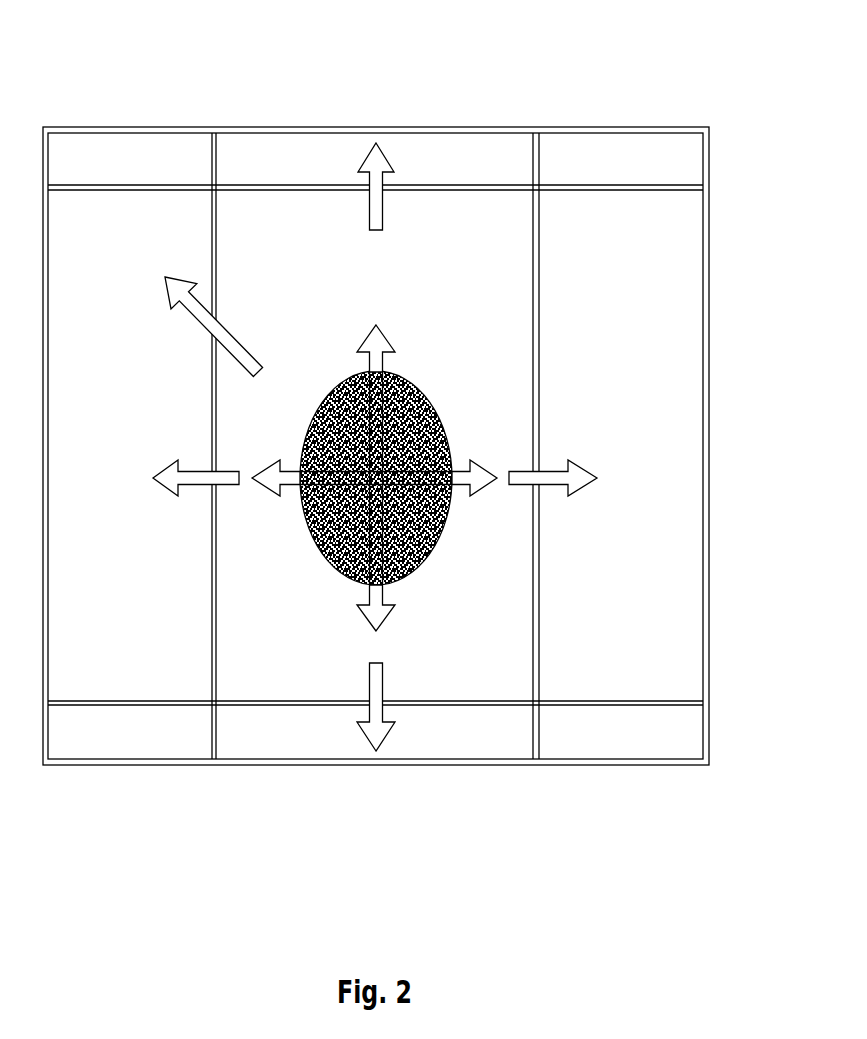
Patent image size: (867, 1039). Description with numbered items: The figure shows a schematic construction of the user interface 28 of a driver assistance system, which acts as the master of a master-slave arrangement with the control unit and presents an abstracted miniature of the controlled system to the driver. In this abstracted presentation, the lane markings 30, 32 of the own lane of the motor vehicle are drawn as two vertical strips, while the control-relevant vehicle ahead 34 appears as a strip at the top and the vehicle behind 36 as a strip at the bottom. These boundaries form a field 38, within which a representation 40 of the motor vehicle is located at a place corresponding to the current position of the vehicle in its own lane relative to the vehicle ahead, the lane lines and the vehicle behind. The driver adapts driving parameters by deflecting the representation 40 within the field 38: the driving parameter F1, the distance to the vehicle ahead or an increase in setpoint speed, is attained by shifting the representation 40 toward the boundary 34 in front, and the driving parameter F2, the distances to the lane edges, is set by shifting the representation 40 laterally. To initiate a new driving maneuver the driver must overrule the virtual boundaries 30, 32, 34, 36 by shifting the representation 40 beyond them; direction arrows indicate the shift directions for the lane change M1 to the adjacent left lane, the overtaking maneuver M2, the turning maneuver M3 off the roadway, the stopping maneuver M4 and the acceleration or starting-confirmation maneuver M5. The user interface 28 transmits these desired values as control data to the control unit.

The user interface 28 is at (469, 126).
The lane marking 30 is at (211, 590).
The lane marking 32 is at (540, 590).
The vehicle ahead 34 is at (278, 186).
The vehicle behind 36 is at (287, 702).
The field 38 is at (376, 445).
The representation of the motor vehicle 40 is at (418, 396).
The driving maneuver M1 is at (171, 468).
The driving maneuver M2 is at (168, 280).
The driving maneuver M3 is at (578, 467).
The driving maneuver M4 is at (391, 730).
The driving maneuver M5 is at (391, 152).
The driving parameter F1 is at (368, 337).
The driving parameter F2 is at (279, 464).